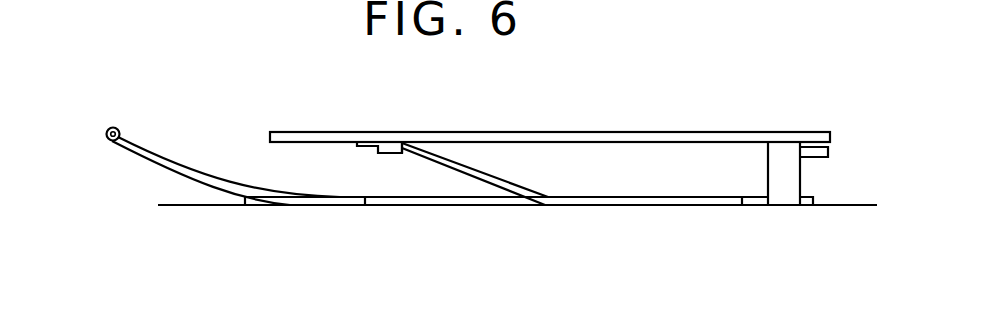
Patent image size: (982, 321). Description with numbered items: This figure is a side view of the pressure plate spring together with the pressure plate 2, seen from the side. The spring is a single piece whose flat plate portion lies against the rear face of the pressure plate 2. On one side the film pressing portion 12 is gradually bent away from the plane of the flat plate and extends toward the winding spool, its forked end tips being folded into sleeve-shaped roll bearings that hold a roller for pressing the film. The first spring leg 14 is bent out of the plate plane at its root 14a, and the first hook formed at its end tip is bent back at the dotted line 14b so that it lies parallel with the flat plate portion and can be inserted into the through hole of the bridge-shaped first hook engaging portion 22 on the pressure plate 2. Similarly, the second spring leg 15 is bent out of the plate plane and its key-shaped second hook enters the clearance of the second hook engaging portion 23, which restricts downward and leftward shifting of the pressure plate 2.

The pressure plate 2 is at (615, 132).
The film pressing portion 12 is at (162, 160).
The first spring leg 14 is at (468, 167).
The root of first spring leg 14a is at (550, 197).
The root of first hook 14b is at (406, 153).
The second spring leg 15 is at (802, 173).
The first hook engaging portion 22 is at (380, 153).
The second hook engaging portion 23 is at (828, 150).